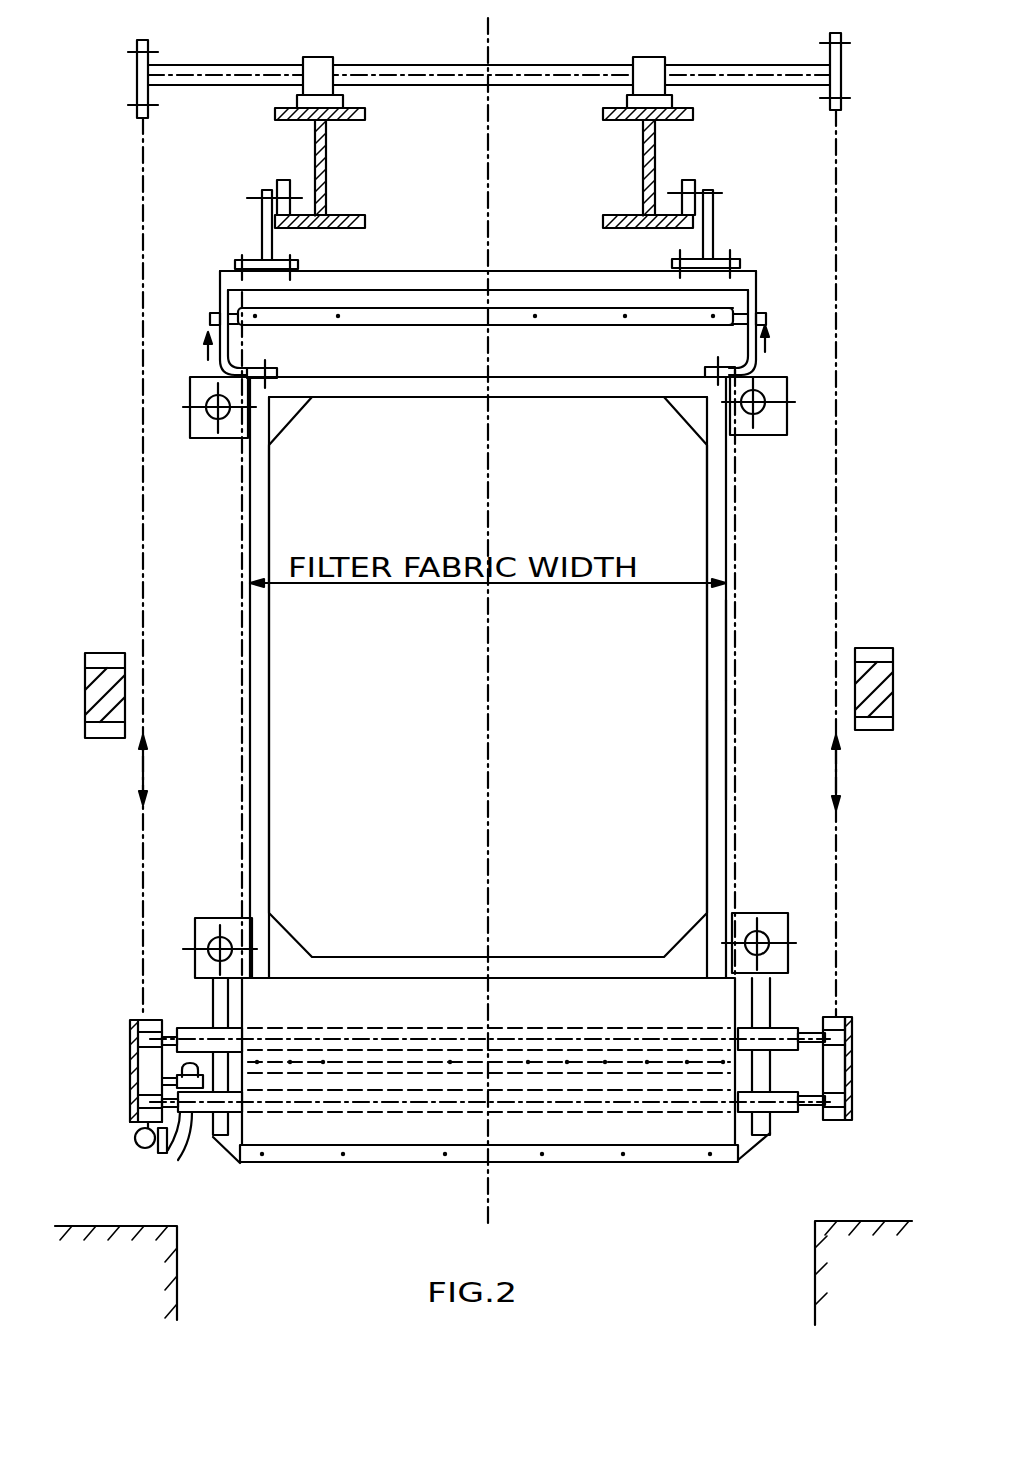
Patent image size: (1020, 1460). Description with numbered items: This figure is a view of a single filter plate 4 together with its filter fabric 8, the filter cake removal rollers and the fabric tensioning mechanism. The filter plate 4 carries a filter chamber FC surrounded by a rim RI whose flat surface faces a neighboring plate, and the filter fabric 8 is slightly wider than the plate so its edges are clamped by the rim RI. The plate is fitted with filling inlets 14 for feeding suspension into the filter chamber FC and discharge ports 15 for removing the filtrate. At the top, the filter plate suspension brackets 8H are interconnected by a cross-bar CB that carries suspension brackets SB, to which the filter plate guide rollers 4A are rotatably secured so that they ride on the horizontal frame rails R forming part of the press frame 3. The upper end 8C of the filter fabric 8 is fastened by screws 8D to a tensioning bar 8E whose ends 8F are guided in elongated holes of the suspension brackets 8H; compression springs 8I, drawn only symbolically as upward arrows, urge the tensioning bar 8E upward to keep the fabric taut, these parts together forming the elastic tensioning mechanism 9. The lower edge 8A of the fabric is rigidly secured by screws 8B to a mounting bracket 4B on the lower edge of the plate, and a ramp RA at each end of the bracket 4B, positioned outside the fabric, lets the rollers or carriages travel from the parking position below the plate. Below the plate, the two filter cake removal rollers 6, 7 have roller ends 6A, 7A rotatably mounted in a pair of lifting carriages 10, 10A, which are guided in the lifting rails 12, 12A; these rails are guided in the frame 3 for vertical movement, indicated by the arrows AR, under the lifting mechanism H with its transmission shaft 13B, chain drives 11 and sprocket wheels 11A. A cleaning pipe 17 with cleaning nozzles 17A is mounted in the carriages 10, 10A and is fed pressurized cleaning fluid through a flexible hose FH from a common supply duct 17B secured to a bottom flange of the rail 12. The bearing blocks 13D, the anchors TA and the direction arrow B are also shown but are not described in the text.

The sprocket wheels 11A is at (148, 64).
The transmission shaft 13B is at (539, 66).
The bearing block 13D is at (318, 63).
The lifting mechanism H is at (807, 43).
The horizontal frame rails R is at (322, 157).
The filter plate guide rollers 4A is at (285, 175).
The suspension brackets SB is at (272, 247).
The cross-bar CB is at (417, 277).
The elastic tensioning mechanism 9 is at (762, 242).
The ends of the tensioning bar 8F is at (210, 313).
The filter plate suspension brackets 8H is at (212, 373).
The compression springs 8I is at (205, 360).
The screws 8D is at (340, 320).
The tensioning bar 8E is at (587, 318).
The upper end of the filter fabric 8C is at (637, 357).
The filter fabric 8 is at (330, 1017).
The rim RI is at (717, 748).
The filter chamber FC is at (585, 713).
The filter plate 4 is at (761, 592).
The discharge ports 15 is at (200, 430).
The filling inlets 14 is at (757, 410).
The tie anchor TA is at (92, 662).
The arrows AR is at (145, 767).
The chain drives 11 is at (143, 453).
The screws 8B is at (343, 1157).
The lower edge of the filter fabric 8A is at (413, 1140).
The cleaning nozzles 17A is at (408, 1063).
The mounting bracket 4B is at (215, 1008).
The filter cake removal roller 6 is at (738, 1030).
The filter cake removal roller 7 is at (783, 1110).
The ramp RA is at (220, 1163).
The roller ends 6A is at (132, 1025).
The lifting carriage 10 is at (132, 1047).
The roller ends 7A is at (132, 1102).
The lifting rail 12A is at (853, 1042).
The lifting carriage 10A is at (833, 1077).
The lifting rail 12 is at (133, 1122).
The cleaning pipe 17 is at (170, 1068).
The cleaning fluid supply pipe or duct 17B is at (142, 1150).
The flexible hose FH is at (183, 1153).
The direction arrow B is at (586, 1188).
The frame 3 is at (177, 1278).